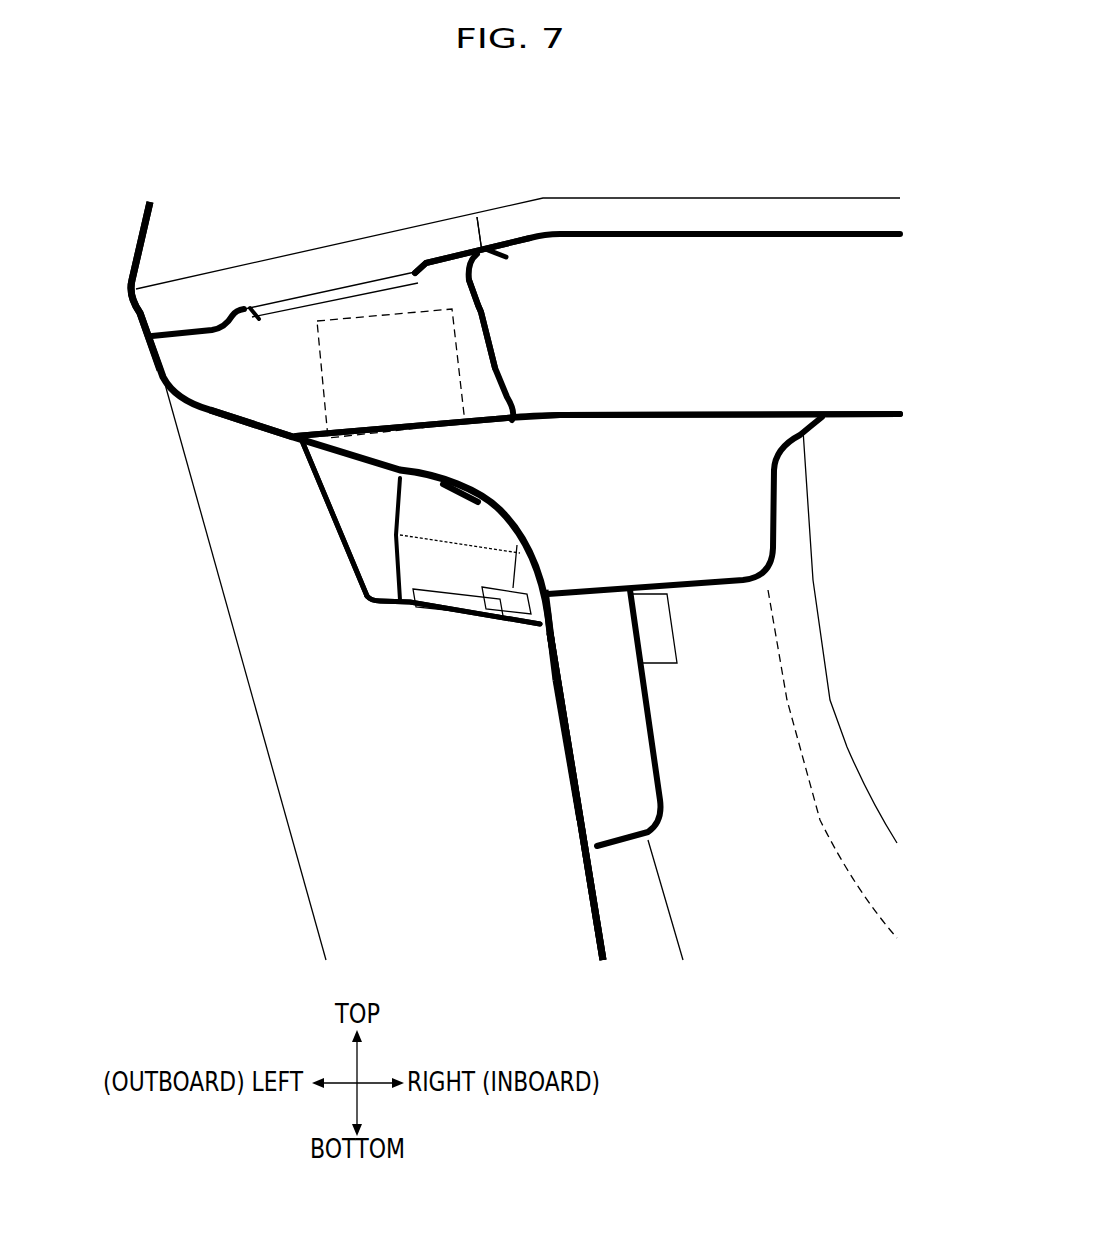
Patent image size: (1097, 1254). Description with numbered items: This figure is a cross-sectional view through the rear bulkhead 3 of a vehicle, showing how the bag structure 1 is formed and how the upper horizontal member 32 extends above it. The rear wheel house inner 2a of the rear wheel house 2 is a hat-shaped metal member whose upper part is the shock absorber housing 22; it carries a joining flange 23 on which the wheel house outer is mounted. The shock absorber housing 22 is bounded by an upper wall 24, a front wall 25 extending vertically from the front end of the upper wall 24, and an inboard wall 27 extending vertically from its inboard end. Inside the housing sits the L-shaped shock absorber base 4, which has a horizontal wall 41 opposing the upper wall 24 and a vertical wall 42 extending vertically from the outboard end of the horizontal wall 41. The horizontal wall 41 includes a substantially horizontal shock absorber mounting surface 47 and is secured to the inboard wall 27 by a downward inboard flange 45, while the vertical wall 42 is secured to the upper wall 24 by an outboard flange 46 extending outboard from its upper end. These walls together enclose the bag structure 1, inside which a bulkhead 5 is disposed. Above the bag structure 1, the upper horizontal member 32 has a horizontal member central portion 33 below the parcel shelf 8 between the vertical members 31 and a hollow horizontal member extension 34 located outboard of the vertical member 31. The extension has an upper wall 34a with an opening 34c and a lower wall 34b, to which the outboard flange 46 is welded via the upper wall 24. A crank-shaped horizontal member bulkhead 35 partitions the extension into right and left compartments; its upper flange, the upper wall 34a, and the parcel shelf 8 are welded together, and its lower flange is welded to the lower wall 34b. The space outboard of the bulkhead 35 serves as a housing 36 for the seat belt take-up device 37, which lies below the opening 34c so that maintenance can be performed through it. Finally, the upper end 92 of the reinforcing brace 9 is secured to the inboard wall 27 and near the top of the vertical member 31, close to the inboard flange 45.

The bag structure 1 is at (338, 560).
The rear wheel house 2 is at (560, 726).
The rear wheel house inner 2a is at (560, 726).
The rear bulkhead 3 is at (826, 439).
The shock absorber base 4 is at (372, 597).
The bulkhead 5 is at (470, 528).
The parcel shelf 8 is at (748, 234).
The reinforcing brace 9 is at (660, 791).
The shock absorber housing 22 is at (206, 408).
The joining flange 23 is at (140, 320).
The upper wall 24 is at (257, 426).
The front wall 25 is at (233, 522).
The inboard wall 27 is at (565, 764).
The vertical member 31 is at (802, 583).
The upper horizontal member 32 is at (666, 418).
The horizontal member central portion 33 is at (666, 418).
The horizontal member extension 34 is at (433, 263).
The upper wall 34a is at (457, 253).
The lower wall 34b is at (453, 433).
The opening 34c is at (413, 270).
The horizontal member bulkhead 35 is at (478, 293).
The housing 36 is at (278, 388).
The seat belt take-up device 37 is at (350, 314).
The horizontal wall 41 is at (402, 607).
The vertical wall 42 is at (340, 515).
The inboard flange 45 is at (547, 647).
The outboard flange 46 is at (304, 440).
The shock absorber mounting surface 47 is at (402, 607).
The upper end 92 is at (643, 627).